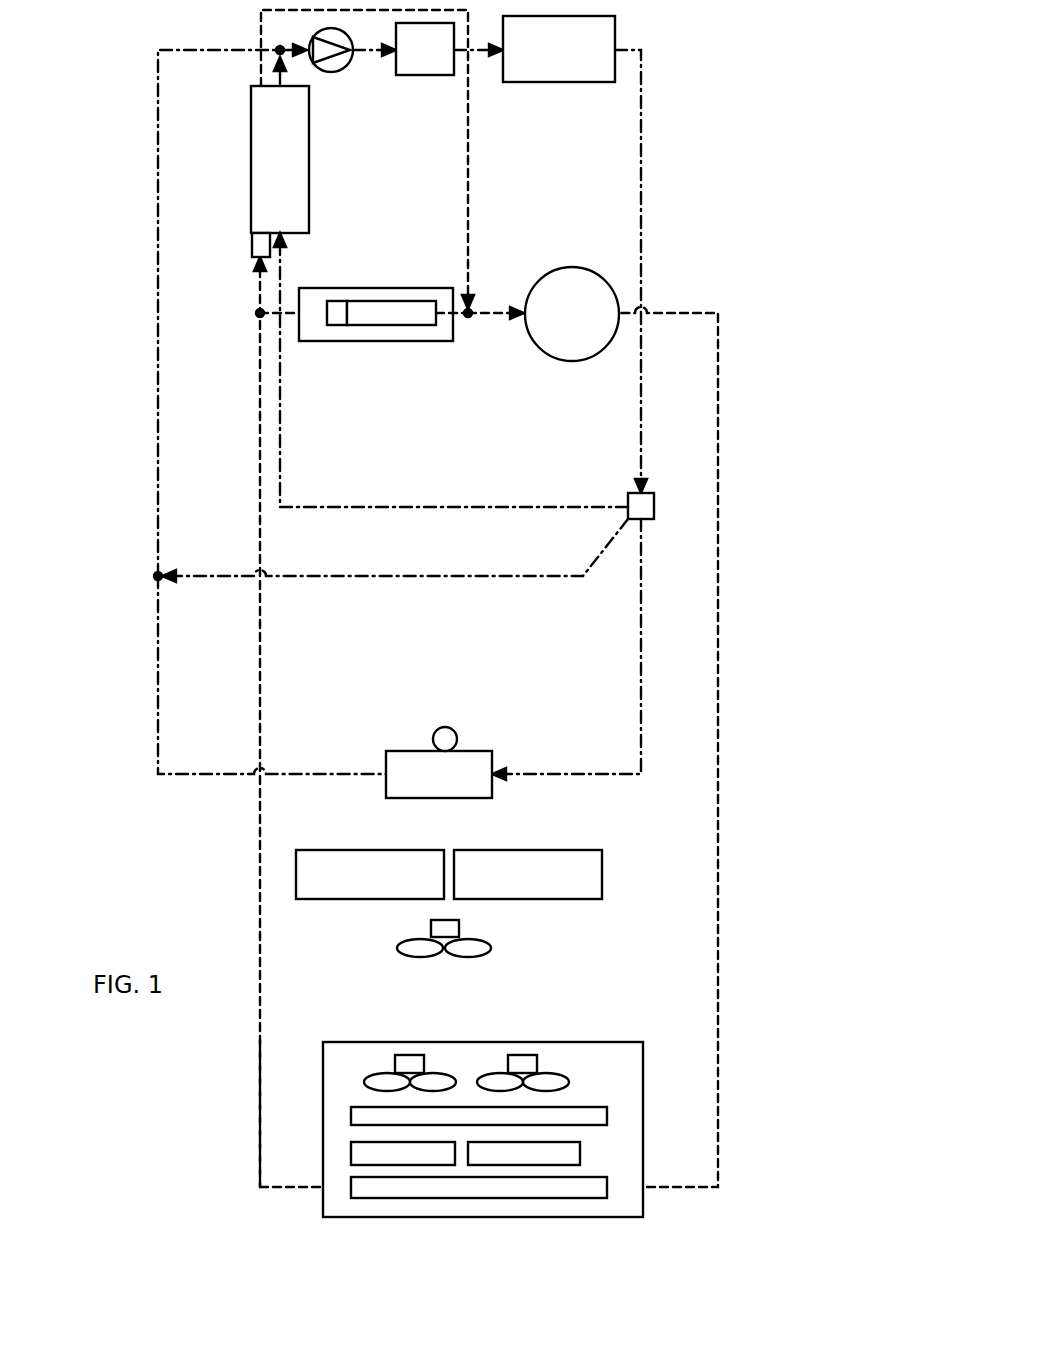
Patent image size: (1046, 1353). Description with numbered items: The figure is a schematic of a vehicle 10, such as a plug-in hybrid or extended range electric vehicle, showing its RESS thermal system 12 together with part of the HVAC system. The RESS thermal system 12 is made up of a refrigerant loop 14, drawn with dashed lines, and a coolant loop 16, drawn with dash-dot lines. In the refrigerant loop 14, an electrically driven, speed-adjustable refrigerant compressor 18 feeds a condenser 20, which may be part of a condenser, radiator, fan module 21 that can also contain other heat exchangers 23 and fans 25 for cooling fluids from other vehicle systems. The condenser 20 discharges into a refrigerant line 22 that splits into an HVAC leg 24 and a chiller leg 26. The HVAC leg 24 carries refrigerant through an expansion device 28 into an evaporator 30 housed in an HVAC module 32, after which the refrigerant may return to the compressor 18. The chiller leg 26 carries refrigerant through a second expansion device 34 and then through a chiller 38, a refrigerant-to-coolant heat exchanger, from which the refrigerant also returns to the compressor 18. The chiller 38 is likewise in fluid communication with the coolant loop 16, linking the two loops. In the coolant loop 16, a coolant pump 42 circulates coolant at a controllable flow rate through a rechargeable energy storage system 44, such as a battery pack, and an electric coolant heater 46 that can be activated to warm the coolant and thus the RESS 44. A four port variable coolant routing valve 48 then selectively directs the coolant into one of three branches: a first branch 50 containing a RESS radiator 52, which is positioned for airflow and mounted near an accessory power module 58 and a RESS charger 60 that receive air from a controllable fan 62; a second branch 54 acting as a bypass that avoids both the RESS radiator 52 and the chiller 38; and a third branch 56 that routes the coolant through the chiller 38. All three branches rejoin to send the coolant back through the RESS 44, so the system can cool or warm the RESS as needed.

The vehicle 10 is at (100, 790).
The RESS thermal system 12 is at (736, 180).
The refrigerant loop 14 is at (718, 746).
The coolant loop 16 is at (158, 510).
The refrigerant compressor 18 is at (565, 267).
The condenser 20 is at (600, 1213).
The condenser, radiator, fan module (CRFM) 21 is at (323, 1200).
The refrigerant line 22 is at (261, 1100).
The other heat exchangers 23 is at (621, 1138).
The HVAC leg 24 is at (295, 315).
The fans 25 is at (417, 1053).
The chiller leg 26 is at (468, 190).
The expansion device 28 is at (340, 301).
The evaporator 30 is at (362, 325).
The HVAC module 32 is at (378, 288).
The expansion device 34 is at (252, 250).
The chiller 38 is at (251, 163).
The coolant pump 42 is at (332, 72).
The rechargeable energy storage system (RESS) 44 is at (530, 82).
The electric coolant heater 46 is at (424, 75).
The four port variable coolant routing valve 48 is at (654, 506).
The first branch 50 is at (638, 668).
The RESS radiator 52 is at (492, 760).
The second branch 54 is at (435, 576).
The third branch 56 is at (437, 507).
The accessory power module 58 is at (588, 850).
The RESS charger 60 is at (345, 850).
The controllable fan 62 is at (485, 957).